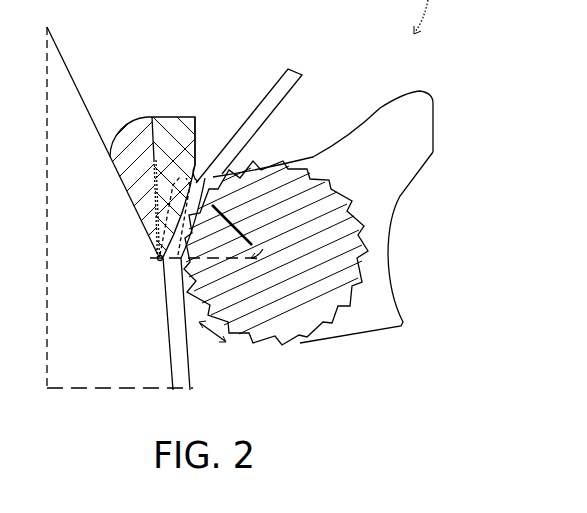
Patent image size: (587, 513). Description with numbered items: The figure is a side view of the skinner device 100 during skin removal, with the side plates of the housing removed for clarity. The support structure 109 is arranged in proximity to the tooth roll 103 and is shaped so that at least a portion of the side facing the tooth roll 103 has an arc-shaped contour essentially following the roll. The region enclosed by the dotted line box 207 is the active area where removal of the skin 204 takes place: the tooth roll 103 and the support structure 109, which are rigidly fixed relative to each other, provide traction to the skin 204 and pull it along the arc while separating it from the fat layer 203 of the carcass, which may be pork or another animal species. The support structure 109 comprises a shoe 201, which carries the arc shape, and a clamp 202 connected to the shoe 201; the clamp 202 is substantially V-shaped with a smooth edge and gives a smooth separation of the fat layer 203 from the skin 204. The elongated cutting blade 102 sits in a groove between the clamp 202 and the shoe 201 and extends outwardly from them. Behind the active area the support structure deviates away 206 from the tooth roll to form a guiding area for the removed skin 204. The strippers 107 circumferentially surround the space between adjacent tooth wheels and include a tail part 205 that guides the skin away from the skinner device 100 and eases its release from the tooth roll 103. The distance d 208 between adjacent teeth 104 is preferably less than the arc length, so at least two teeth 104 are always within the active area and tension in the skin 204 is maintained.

The skinner device 100 is at (441, 17).
The elongated cutting blade 102 is at (162, 262).
The tooth roll 103 is at (295, 230).
The teeth 104 is at (178, 303).
The strippers 107 is at (391, 178).
The support structure 109 is at (140, 110).
The shoe 201 is at (182, 150).
The clamp 202 is at (146, 150).
The fat layer 203 is at (88, 214).
The skin 204 is at (258, 116).
The tail part 205 is at (421, 78).
The deviation away from the tooth roll 206 is at (203, 132).
The dotted line box 207 is at (152, 221).
The distance d 208 is at (209, 356).